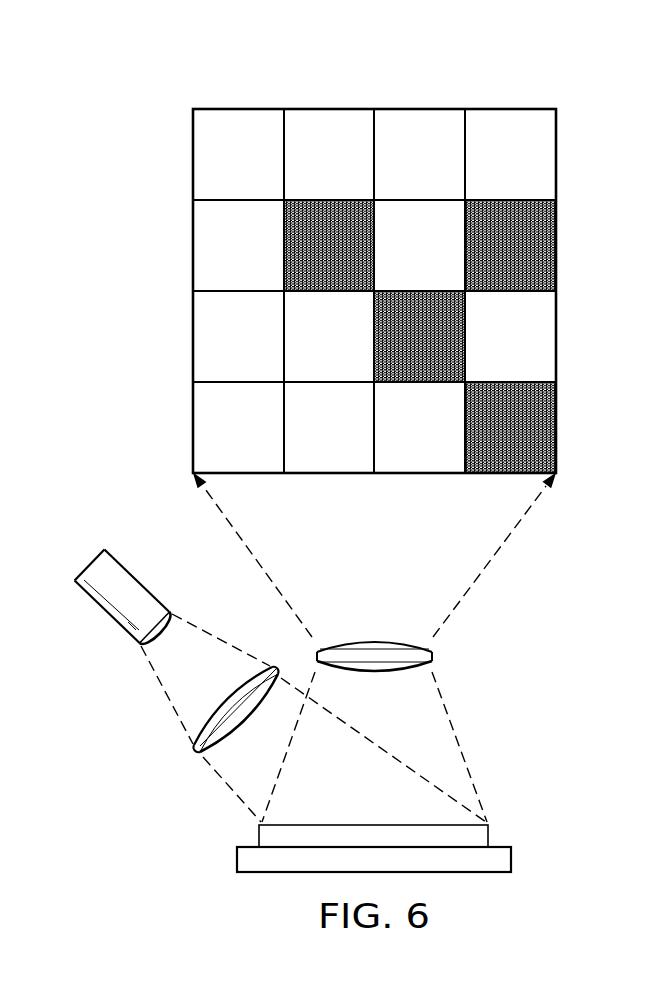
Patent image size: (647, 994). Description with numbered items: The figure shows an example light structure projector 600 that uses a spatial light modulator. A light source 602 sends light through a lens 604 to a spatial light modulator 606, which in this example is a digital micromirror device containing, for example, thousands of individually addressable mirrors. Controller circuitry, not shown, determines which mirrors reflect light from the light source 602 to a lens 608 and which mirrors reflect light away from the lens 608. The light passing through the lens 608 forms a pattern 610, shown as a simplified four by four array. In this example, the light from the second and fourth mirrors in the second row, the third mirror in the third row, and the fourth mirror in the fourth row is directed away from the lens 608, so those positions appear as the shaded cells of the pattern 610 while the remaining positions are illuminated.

The light structure projector 600 is at (343, 450).
The light source 602 is at (105, 616).
The lens 604 is at (196, 754).
The spatial light modulator 606 is at (511, 858).
The lens 608 is at (434, 660).
The pattern 610 is at (556, 257).